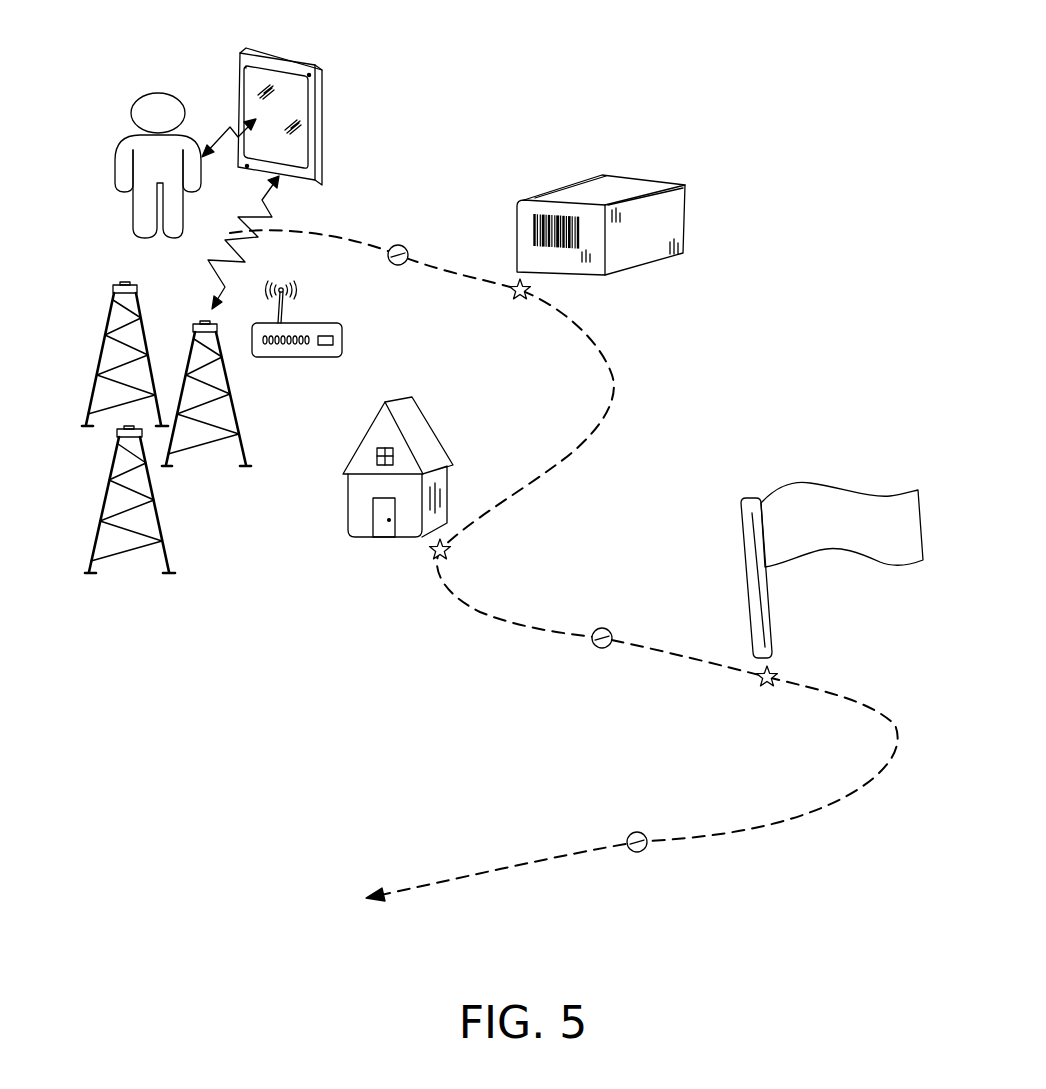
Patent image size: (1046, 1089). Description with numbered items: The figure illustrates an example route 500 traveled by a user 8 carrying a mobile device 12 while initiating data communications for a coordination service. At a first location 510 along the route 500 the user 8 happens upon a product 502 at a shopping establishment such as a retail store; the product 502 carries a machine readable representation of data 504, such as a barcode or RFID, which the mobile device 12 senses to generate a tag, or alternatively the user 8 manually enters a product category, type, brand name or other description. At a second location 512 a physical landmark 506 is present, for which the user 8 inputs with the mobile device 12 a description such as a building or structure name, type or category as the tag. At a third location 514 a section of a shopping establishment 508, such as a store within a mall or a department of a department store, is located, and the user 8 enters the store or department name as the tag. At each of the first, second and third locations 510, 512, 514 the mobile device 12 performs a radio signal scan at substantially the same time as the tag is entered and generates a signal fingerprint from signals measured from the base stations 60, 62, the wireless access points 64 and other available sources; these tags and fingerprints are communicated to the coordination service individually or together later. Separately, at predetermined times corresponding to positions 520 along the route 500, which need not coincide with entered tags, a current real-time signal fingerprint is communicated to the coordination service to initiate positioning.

The user 8 is at (158, 103).
The mobile device 12 is at (322, 92).
The base stations 60 is at (145, 330).
The base stations 62 is at (175, 440).
The wireless access points 64 is at (302, 358).
The route 500 is at (620, 369).
The product 502 is at (610, 180).
The machine readable representation of data 504 is at (535, 218).
The physical landmark 506 is at (398, 410).
The section of a shopping establishment 508 is at (820, 488).
The first location 510 is at (520, 302).
The second location 512 is at (450, 551).
The third location 514 is at (760, 680).
The positions 520 is at (398, 245).